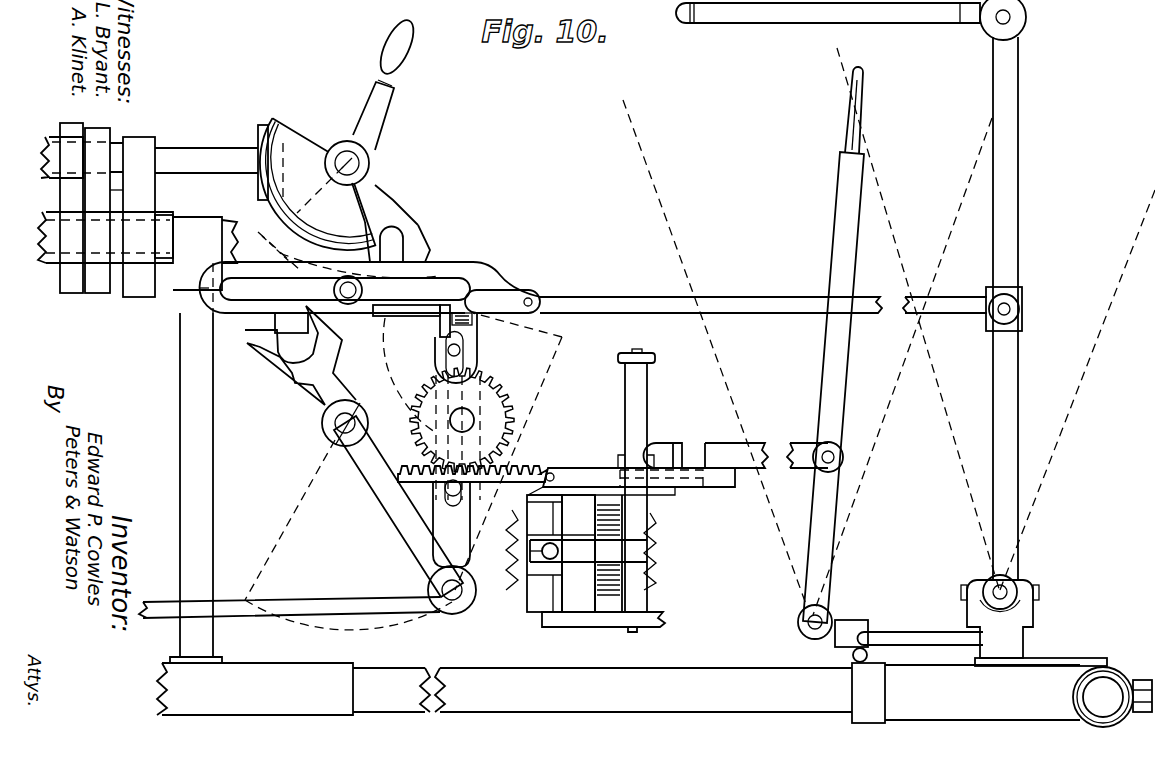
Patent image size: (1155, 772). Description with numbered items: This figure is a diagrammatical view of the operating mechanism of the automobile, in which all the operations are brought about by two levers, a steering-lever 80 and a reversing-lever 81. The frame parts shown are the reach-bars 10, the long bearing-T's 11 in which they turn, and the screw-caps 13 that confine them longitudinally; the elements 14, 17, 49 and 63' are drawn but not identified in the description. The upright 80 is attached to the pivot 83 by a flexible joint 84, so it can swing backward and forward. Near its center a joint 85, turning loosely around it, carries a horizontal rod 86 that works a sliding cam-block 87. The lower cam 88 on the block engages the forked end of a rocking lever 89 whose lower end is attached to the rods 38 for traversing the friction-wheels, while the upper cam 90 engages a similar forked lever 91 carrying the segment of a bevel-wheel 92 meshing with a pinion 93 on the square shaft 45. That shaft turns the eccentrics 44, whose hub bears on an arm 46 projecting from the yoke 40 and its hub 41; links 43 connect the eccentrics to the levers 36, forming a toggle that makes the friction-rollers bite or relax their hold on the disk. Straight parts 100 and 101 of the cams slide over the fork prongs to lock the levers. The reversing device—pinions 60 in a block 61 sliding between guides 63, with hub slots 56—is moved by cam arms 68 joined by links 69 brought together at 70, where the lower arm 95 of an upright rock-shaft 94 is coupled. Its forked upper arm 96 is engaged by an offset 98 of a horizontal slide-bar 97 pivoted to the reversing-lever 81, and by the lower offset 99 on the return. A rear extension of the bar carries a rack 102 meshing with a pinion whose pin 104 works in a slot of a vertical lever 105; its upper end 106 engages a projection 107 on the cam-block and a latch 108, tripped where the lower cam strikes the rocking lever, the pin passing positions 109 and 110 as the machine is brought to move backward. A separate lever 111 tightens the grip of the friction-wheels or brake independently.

The reach-bars 10 is at (602, 690).
The bearing-T's 11 is at (270, 699).
The screw-caps 13 is at (868, 693).
The frame bar 14 is at (1018, 696).
The shaft end 17 is at (1118, 712).
The levers 36 is at (92, 220).
The rods 38 is at (304, 604).
The yoke 40 is at (183, 252).
The hub 41 is at (105, 237).
The links 43 is at (62, 157).
The eccentrics 44 is at (40, 121).
The square shaft 45 is at (207, 152).
The arm 46 is at (139, 217).
The frame post 49 is at (181, 407).
The slots 56 is at (528, 557).
The pinions 60 is at (578, 553).
The block 61 is at (578, 526).
The guides 63 is at (621, 569).
The broken-away plate 63' is at (673, 551).
The arms 68 is at (550, 472).
The links 69 is at (513, 604).
The coupling point 70 is at (530, 549).
The steering-lever 80 is at (1019, 405).
The reversing-lever 81 is at (845, 355).
The pivot 83 is at (1020, 660).
The flexible joint 84 is at (1039, 594).
The joint 85 is at (1023, 302).
The horizontal rod 86 is at (763, 293).
The sliding cam-block 87 is at (486, 273).
The lower cam 88 is at (318, 304).
The rocking lever 89 is at (284, 348).
The upper cam 90 is at (428, 255).
The forked lever 91 is at (392, 208).
The segment of a bevel-wheel 92 is at (336, 172).
The pinion 93 is at (258, 186).
The upright rock-shaft 94 is at (626, 411).
The lower arm 95 is at (630, 553).
The upper arm 96 is at (670, 444).
The horizontal slide-bar 97 is at (577, 468).
The offset 98 is at (718, 444).
The lower offset 99 is at (736, 488).
The straight part 100 is at (386, 320).
The straight part 101 is at (282, 244).
The rack 102 is at (505, 468).
The pin 104 is at (470, 488).
The vertical lever 105 is at (445, 540).
The upper end 106 is at (472, 322).
The projection 107 is at (440, 333).
The latch 108 is at (502, 301).
The position 109 is at (432, 426).
The position 110 is at (466, 350).
The lever 111 is at (392, 48).